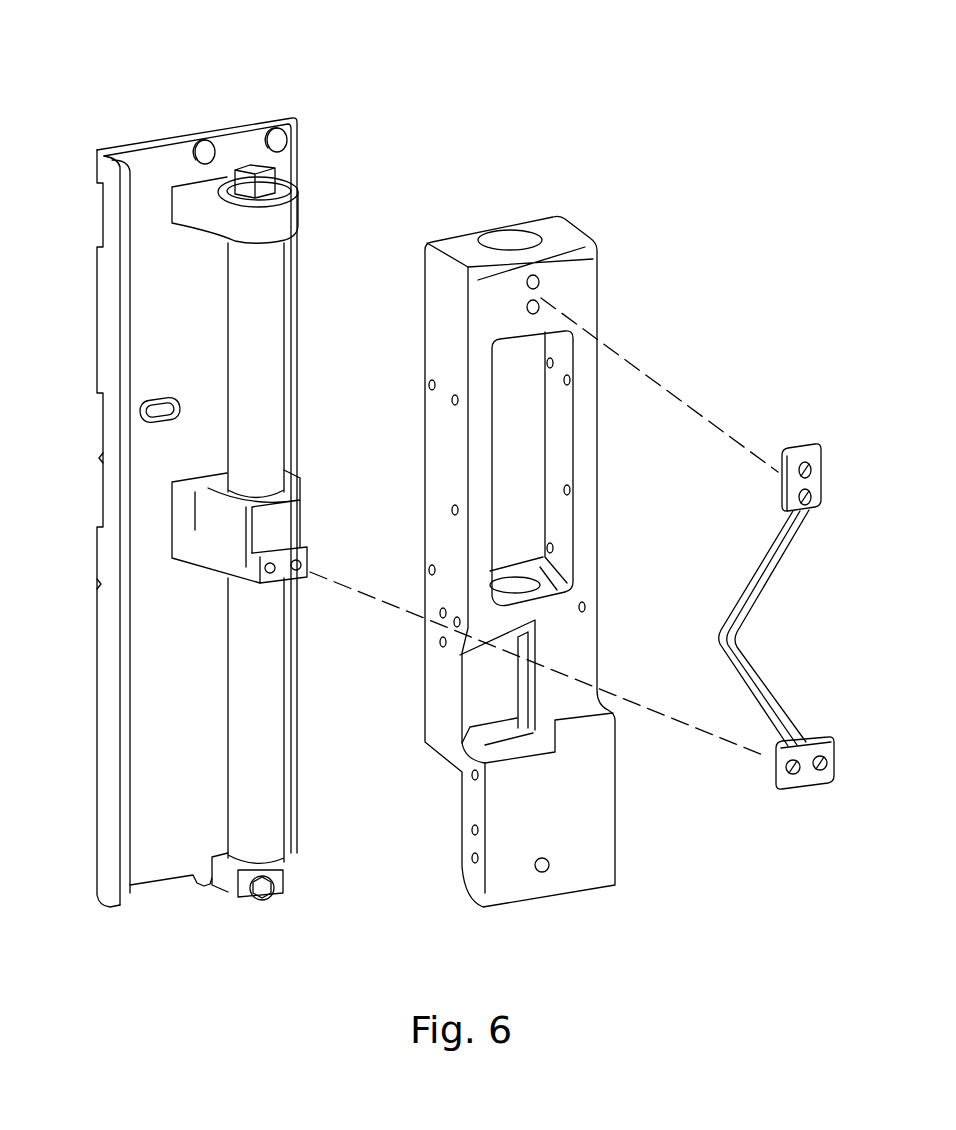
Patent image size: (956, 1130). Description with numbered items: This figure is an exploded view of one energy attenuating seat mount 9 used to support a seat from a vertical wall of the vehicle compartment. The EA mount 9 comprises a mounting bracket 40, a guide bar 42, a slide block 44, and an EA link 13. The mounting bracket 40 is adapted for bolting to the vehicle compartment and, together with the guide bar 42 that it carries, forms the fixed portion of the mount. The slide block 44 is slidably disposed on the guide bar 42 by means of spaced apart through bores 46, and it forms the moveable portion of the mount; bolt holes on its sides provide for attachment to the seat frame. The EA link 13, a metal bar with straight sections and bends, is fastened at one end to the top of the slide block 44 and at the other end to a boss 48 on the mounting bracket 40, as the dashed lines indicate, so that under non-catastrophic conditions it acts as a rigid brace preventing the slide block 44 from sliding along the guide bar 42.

The energy attenuating seat mount 9 is at (518, 58).
The EA link 13 is at (770, 578).
The mounting bracket 40 is at (182, 130).
The guide bar 42 is at (263, 333).
The slide block 44 is at (562, 233).
The through bores 46 is at (503, 233).
The boss 48 is at (273, 587).